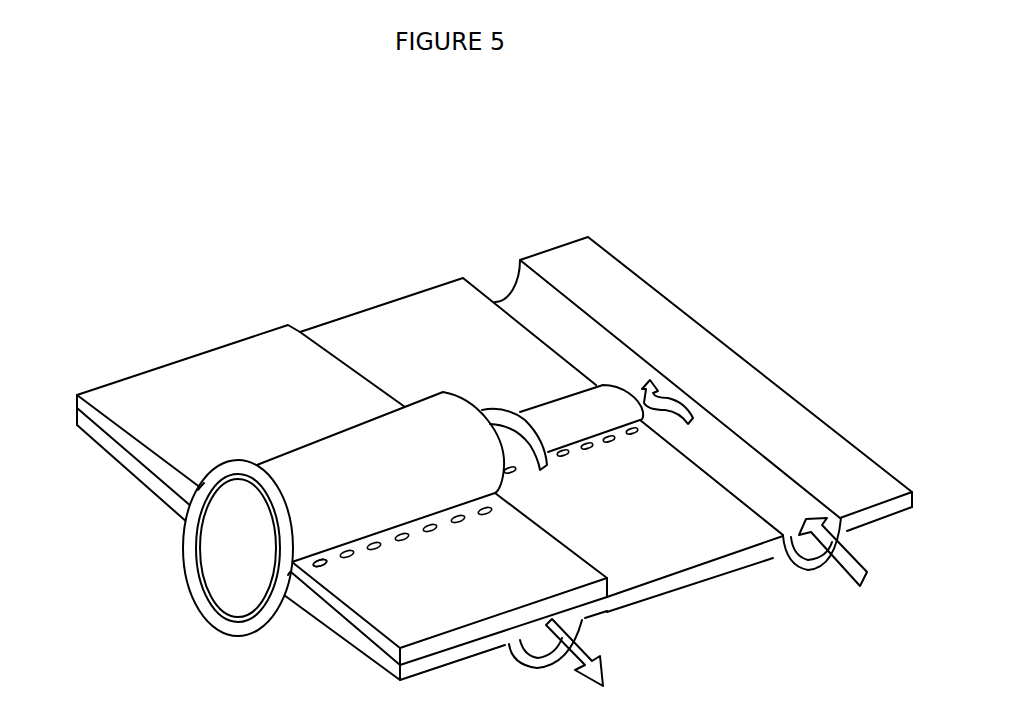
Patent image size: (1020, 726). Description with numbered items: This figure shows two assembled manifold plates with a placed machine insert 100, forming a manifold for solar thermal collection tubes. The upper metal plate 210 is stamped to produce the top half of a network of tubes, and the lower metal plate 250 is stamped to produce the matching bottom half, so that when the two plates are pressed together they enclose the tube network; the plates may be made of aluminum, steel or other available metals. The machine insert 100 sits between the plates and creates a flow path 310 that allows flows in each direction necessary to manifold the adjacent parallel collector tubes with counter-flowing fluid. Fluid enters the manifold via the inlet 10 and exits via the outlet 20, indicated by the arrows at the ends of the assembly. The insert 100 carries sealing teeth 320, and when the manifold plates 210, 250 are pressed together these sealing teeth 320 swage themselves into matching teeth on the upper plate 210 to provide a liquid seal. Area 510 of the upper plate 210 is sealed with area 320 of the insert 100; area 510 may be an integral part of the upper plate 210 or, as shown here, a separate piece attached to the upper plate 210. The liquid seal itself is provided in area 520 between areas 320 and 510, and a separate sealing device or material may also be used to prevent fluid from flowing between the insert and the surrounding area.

The inlet 10 is at (841, 565).
The outlet 20 is at (567, 668).
The machine insert 100 is at (598, 408).
The upper metal plate 210 is at (185, 386).
The lower metal plate 250 is at (657, 517).
The flow path 310 is at (681, 414).
The sealing teeth 320 is at (203, 587).
The sealed area of upper plate 510 is at (252, 480).
The liquid seal area 520 is at (203, 507).